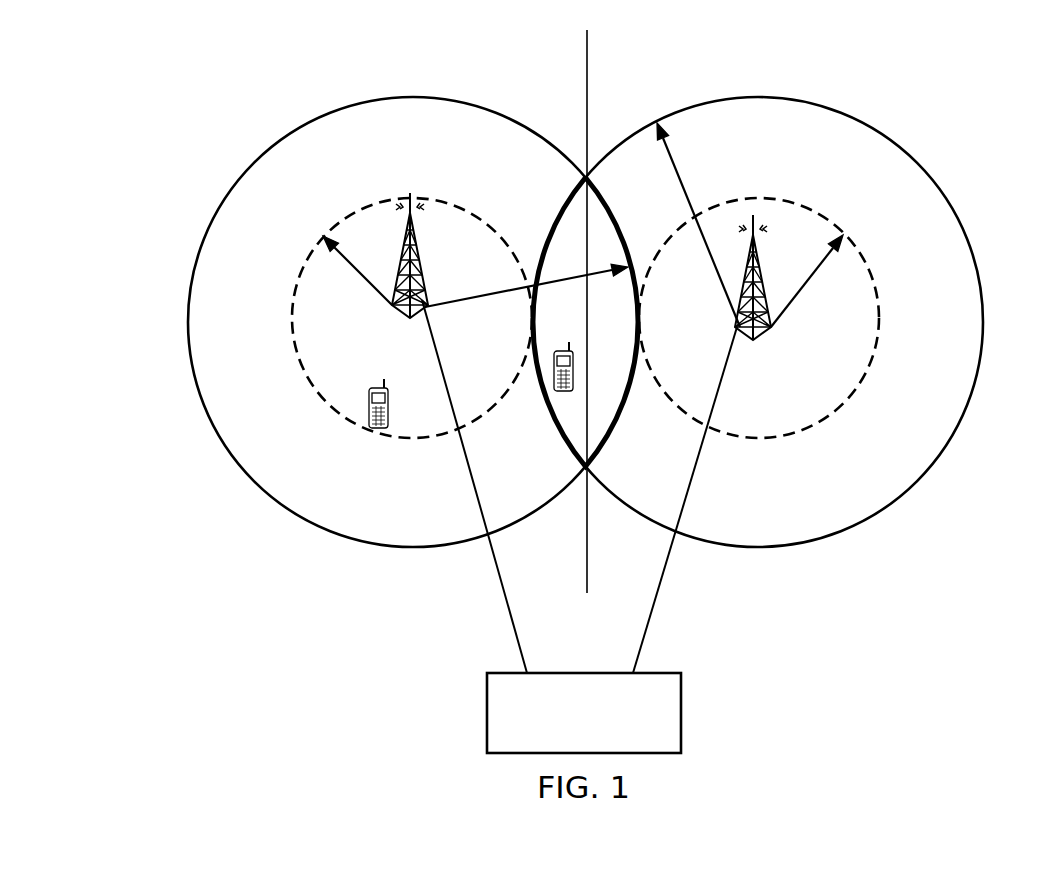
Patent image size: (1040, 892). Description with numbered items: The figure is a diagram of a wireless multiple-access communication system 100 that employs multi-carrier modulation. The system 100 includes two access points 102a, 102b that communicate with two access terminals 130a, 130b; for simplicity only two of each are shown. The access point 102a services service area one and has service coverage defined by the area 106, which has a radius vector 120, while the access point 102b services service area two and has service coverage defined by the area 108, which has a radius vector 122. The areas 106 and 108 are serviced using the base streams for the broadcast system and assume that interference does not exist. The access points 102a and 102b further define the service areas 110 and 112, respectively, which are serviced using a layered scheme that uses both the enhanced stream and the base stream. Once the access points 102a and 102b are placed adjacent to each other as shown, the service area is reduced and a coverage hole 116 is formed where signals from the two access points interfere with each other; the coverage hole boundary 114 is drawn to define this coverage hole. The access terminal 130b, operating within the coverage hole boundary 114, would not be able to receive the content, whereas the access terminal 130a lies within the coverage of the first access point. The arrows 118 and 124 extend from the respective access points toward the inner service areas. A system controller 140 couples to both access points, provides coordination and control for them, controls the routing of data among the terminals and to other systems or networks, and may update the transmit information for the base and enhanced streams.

The wireless multiple-access communication system 100 is at (548, 391).
The access point 102a is at (423, 271).
The access point 102b is at (757, 282).
The service coverage area 106 is at (195, 393).
The service coverage area 108 is at (972, 394).
The service area 110 is at (290, 333).
The service area 112 is at (878, 319).
The coverage hole boundary 114 is at (614, 431).
The coverage hole 116 is at (587, 232).
The transmission range arrow of BS 1 118 is at (357, 271).
The radius vector 120 is at (465, 303).
The radius vector 122 is at (712, 268).
The transmission range arrow of adjacent BS 124 is at (805, 285).
The access terminal 130a is at (369, 383).
The access terminal 130b is at (567, 343).
The system controller 140 is at (583, 672).